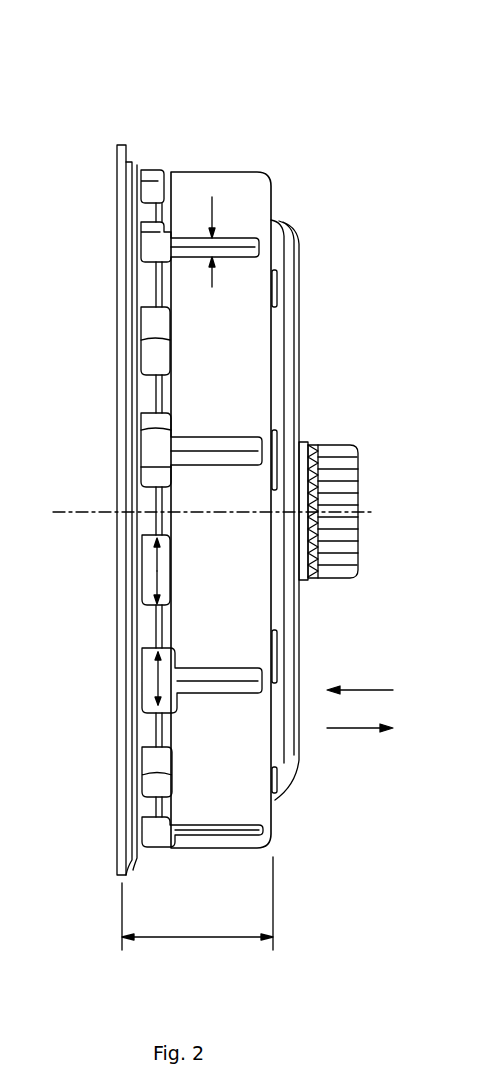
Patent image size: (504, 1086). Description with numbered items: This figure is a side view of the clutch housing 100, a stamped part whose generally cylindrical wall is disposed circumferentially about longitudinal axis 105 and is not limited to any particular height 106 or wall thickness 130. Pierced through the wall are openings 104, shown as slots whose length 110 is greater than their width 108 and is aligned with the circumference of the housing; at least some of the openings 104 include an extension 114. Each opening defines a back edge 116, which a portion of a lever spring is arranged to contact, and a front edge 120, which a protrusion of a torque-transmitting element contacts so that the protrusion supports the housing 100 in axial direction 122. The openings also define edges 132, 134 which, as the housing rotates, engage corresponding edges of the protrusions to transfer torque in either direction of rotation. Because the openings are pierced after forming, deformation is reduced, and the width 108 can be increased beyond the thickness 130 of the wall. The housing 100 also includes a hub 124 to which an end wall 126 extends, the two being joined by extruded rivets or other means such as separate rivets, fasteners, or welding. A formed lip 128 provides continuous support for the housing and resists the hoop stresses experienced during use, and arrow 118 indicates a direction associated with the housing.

The clutch housing 100 is at (243, 100).
The openings 104 is at (150, 320).
The longitudinal axis 105 is at (98, 513).
The height 106 is at (200, 938).
The width 108 is at (207, 367).
The length 110 is at (152, 565).
The extension 114 is at (215, 448).
The back edge 116 is at (142, 467).
The first direction 118 is at (368, 690).
The front edge 120 is at (150, 247).
The axial direction 122 is at (343, 728).
The hub 124 is at (340, 533).
The end wall 126 is at (290, 760).
The lip 128 is at (120, 145).
The thickness 130 is at (212, 287).
The edge 132 is at (168, 540).
The edge 134 is at (168, 602).